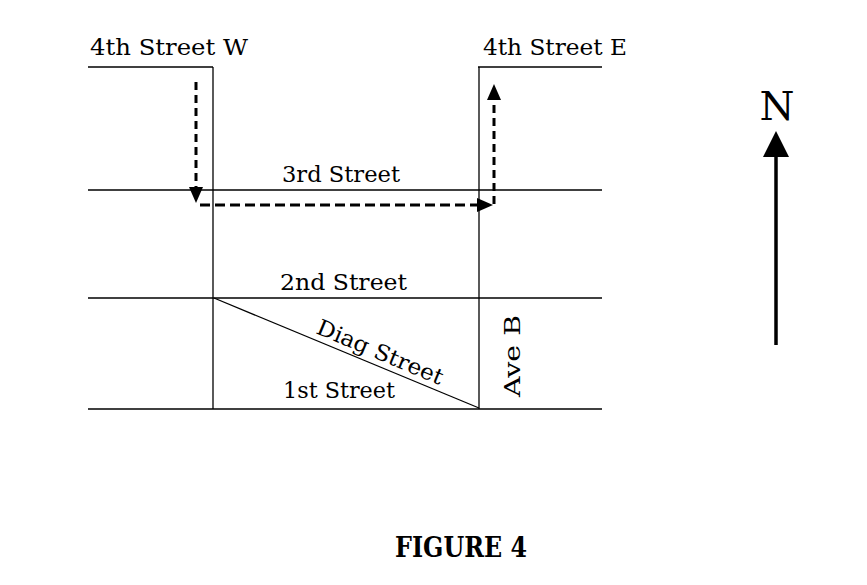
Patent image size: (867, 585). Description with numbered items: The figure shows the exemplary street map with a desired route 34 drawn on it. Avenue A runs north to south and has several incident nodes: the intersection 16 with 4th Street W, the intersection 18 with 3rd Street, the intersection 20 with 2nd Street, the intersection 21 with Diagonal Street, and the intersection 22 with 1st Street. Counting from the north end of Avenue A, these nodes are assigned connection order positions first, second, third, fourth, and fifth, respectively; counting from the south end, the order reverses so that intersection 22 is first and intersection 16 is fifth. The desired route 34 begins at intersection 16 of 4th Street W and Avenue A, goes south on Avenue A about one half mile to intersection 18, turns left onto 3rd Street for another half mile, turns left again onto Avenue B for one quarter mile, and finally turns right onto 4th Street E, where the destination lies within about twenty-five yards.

The intersection with 4th Street W 16 is at (220, 74).
The intersection with 3rd Street 18 is at (180, 184).
The intersection with 2nd Street 20 is at (205, 293).
The intersection with Diagonal Street 21 is at (196, 311).
The intersection with 1st Street 22 is at (196, 424).
The desired route 34 is at (178, 133).